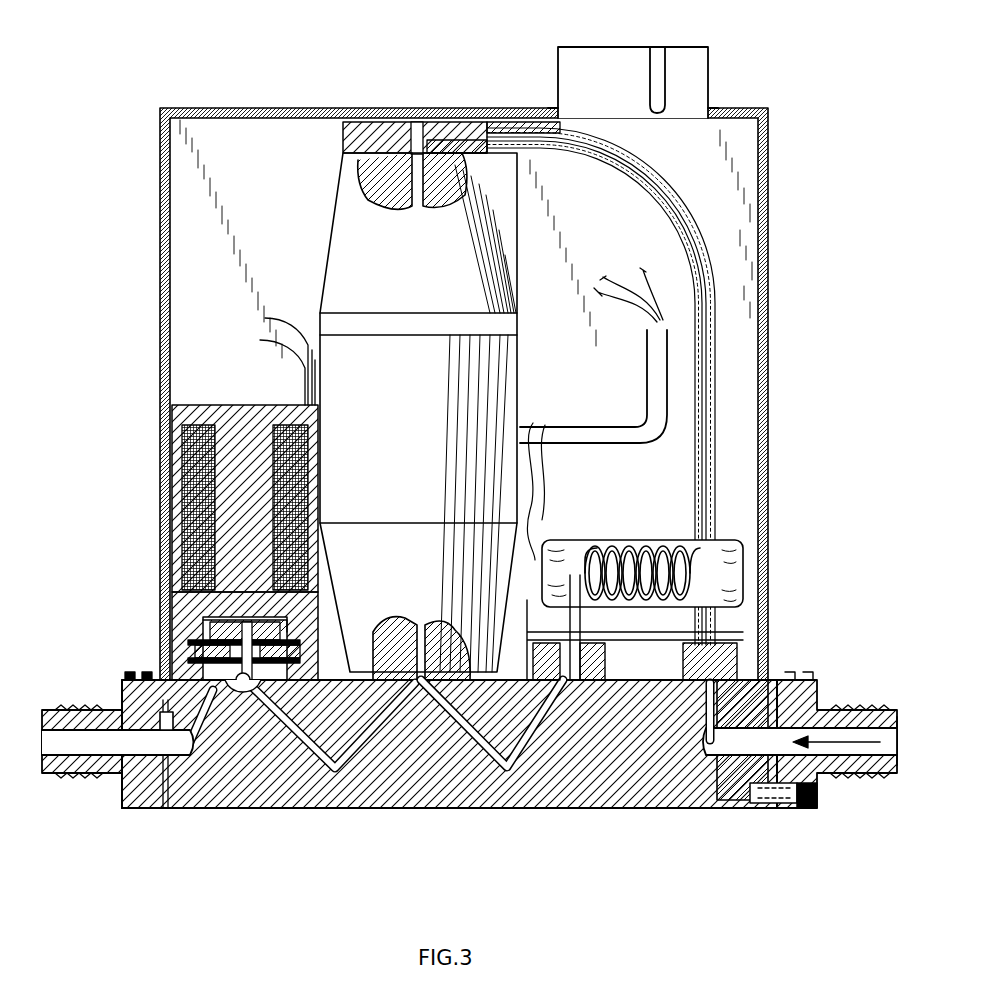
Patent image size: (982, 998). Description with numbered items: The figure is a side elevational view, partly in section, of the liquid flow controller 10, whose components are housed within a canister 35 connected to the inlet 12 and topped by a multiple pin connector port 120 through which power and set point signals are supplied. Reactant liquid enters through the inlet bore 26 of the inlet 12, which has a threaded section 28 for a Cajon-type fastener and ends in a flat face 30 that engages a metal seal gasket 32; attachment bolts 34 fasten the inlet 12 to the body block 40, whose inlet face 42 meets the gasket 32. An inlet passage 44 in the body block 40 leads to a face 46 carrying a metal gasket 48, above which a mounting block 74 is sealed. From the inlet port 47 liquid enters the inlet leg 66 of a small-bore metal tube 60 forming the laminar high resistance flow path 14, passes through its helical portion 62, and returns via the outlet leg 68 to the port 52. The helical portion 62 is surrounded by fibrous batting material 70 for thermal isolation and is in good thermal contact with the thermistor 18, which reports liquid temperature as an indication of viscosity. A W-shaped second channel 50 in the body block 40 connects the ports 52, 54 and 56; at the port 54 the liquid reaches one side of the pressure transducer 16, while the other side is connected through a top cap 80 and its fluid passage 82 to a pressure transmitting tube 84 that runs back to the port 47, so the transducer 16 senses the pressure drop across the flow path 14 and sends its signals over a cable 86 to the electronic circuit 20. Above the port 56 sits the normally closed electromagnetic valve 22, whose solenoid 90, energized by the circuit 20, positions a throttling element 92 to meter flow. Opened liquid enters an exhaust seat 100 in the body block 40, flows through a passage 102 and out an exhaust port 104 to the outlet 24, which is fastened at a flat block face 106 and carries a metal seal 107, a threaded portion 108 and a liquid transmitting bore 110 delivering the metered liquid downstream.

The liquid flow controller 10 is at (778, 150).
The inlet 12 is at (895, 770).
The high resistance fluid flow path 14 is at (552, 540).
The pressure transducer 16 is at (332, 210).
The thermistor 18 is at (632, 548).
The electronic circuit 20 is at (700, 75).
The valve 22 is at (200, 405).
The liquid outlet 24 is at (130, 810).
The inlet bore 26 is at (880, 715).
The threaded section 28 is at (840, 705).
The flat face 30 is at (770, 803).
The metal seal gasket 32 is at (778, 678).
The attachment bolts 34 is at (810, 808).
The canister 35 is at (190, 108).
The body block 40 is at (603, 810).
The inlet face 42 is at (722, 760).
The inlet passage 44 is at (690, 730).
The face 46 is at (573, 685).
The port 47 is at (660, 685).
The metal gasket 48 is at (730, 660).
The second channel 50 is at (408, 700).
The port 52 is at (560, 685).
The port 54 is at (375, 660).
The port 56 is at (245, 692).
The metal tube 60 is at (670, 548).
The helical portion 62 is at (605, 545).
The inlet leg 66 is at (768, 580).
The outlet leg 68 is at (568, 628).
The fibrous batting material 70 is at (745, 548).
The mounting block 74 is at (762, 640).
The top cap 80 is at (365, 122).
The fluid passage 82 is at (455, 132).
The pressure transmitting tube 84 is at (510, 136).
The cable 86 is at (603, 425).
The solenoid 90 is at (178, 497).
The throttling element 92 is at (203, 620).
The exhaust seat 100 is at (195, 645).
The passage 102 is at (160, 735).
The exhaust port 104 is at (182, 808).
The block face 106 is at (130, 760).
The metal seal 107 is at (160, 678).
The threaded portion 108 is at (75, 715).
The liquid transmitting bore 110 is at (55, 723).
The multiple pin connector port 120 is at (607, 62).